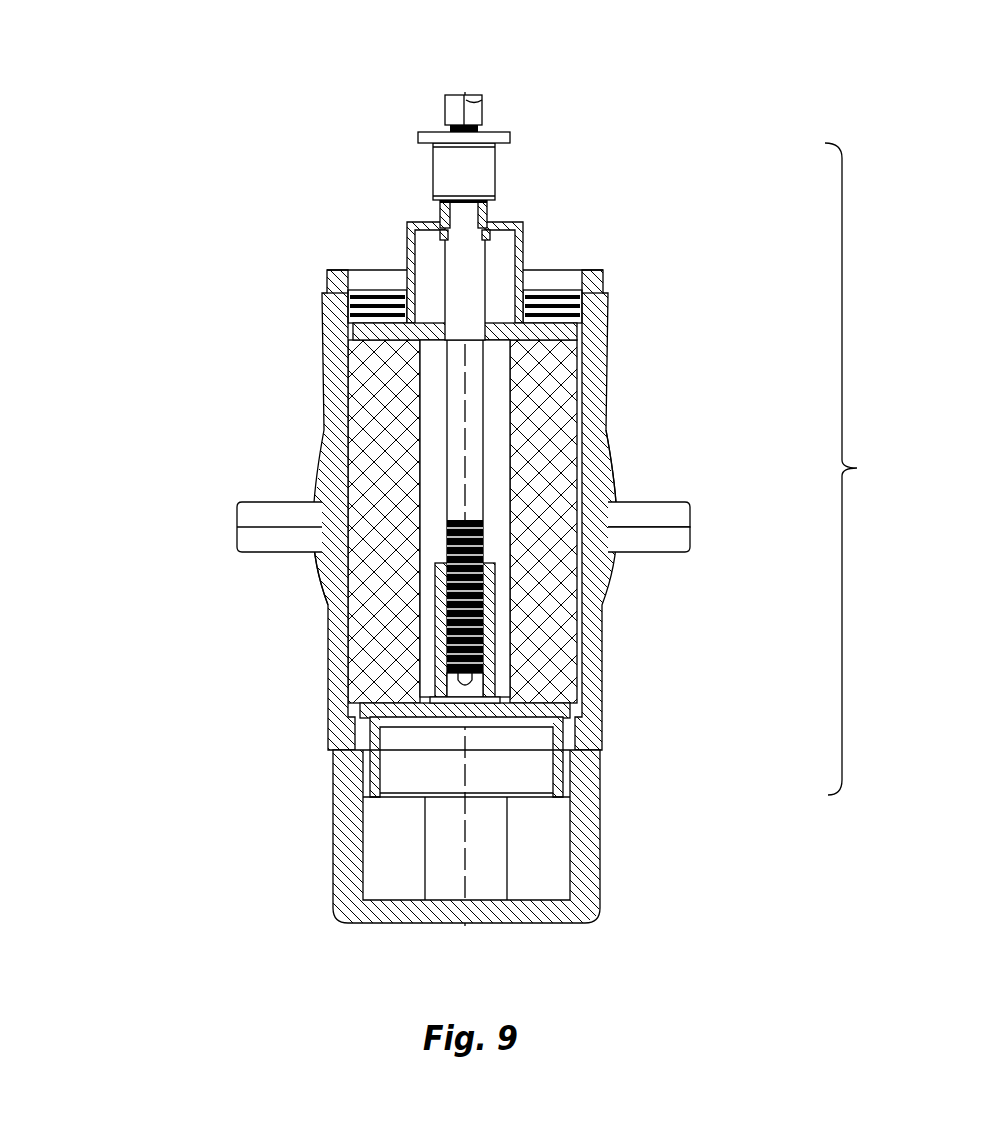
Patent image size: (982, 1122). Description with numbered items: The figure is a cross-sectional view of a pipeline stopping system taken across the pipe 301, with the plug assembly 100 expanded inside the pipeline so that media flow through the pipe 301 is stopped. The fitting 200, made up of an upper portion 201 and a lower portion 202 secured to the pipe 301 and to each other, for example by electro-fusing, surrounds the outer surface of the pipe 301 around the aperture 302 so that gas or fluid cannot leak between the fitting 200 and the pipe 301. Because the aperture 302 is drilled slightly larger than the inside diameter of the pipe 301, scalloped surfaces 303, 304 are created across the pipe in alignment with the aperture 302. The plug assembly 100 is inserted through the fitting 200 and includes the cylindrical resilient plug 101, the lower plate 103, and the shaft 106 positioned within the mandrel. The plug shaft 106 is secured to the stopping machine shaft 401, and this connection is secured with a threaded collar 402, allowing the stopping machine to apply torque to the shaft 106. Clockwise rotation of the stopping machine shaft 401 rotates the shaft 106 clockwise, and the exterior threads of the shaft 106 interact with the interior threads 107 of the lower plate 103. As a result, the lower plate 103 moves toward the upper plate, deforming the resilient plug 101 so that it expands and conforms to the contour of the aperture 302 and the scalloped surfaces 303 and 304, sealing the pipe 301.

The plug assembly 100 is at (865, 469).
The cylindrical resilient plug 101 is at (603, 332).
The lower plate 103 is at (598, 812).
The shaft 106 is at (468, 277).
The interior threads 107 is at (440, 607).
The fitting 200 is at (110, 272).
The upper portion 201 is at (645, 512).
The lower portion 202 is at (668, 540).
The pipe 301 is at (327, 470).
The aperture 302 is at (607, 590).
The scalloped surface 303 is at (317, 562).
The scalloped surface 304 is at (630, 448).
The stopping machine shaft 401 is at (475, 112).
The threaded collar 402 is at (432, 135).